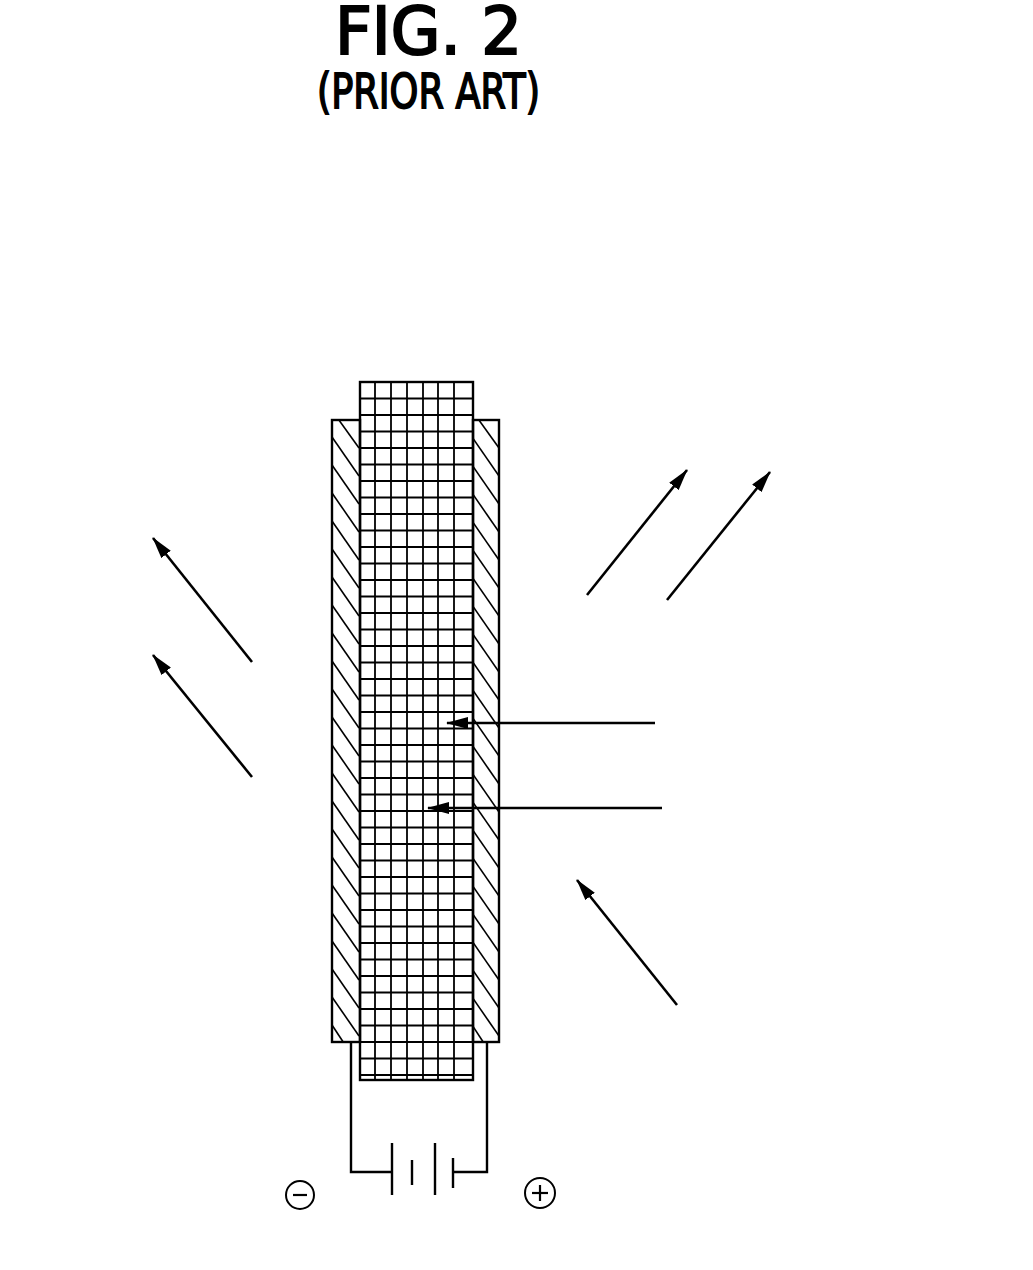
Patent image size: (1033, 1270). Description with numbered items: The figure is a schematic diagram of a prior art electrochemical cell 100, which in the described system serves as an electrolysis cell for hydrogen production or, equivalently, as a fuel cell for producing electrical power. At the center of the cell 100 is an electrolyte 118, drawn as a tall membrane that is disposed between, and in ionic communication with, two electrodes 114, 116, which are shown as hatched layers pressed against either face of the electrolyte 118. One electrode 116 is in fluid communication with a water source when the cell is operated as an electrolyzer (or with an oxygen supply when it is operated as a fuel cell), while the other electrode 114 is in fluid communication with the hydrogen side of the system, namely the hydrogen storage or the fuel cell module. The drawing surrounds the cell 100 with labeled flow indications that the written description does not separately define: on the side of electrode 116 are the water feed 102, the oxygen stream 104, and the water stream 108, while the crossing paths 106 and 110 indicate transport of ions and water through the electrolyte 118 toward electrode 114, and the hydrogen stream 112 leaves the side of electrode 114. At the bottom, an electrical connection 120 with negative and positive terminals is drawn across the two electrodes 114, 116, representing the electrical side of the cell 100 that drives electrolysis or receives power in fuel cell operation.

The electrolysis cell 100 is at (566, 410).
The water feed to anode 102 is at (628, 945).
The oxygen outlet 104 is at (637, 525).
The proton transport through membrane 106 is at (545, 723).
The water outlet from anode 108 is at (720, 537).
The water transport 110 is at (183, 697).
The hydrogen outlet 112 is at (218, 613).
The electrode 114 is at (331, 440).
The electrode 116 is at (499, 452).
The electrolyte 118 is at (425, 382).
The power supply 120 is at (547, 1107).